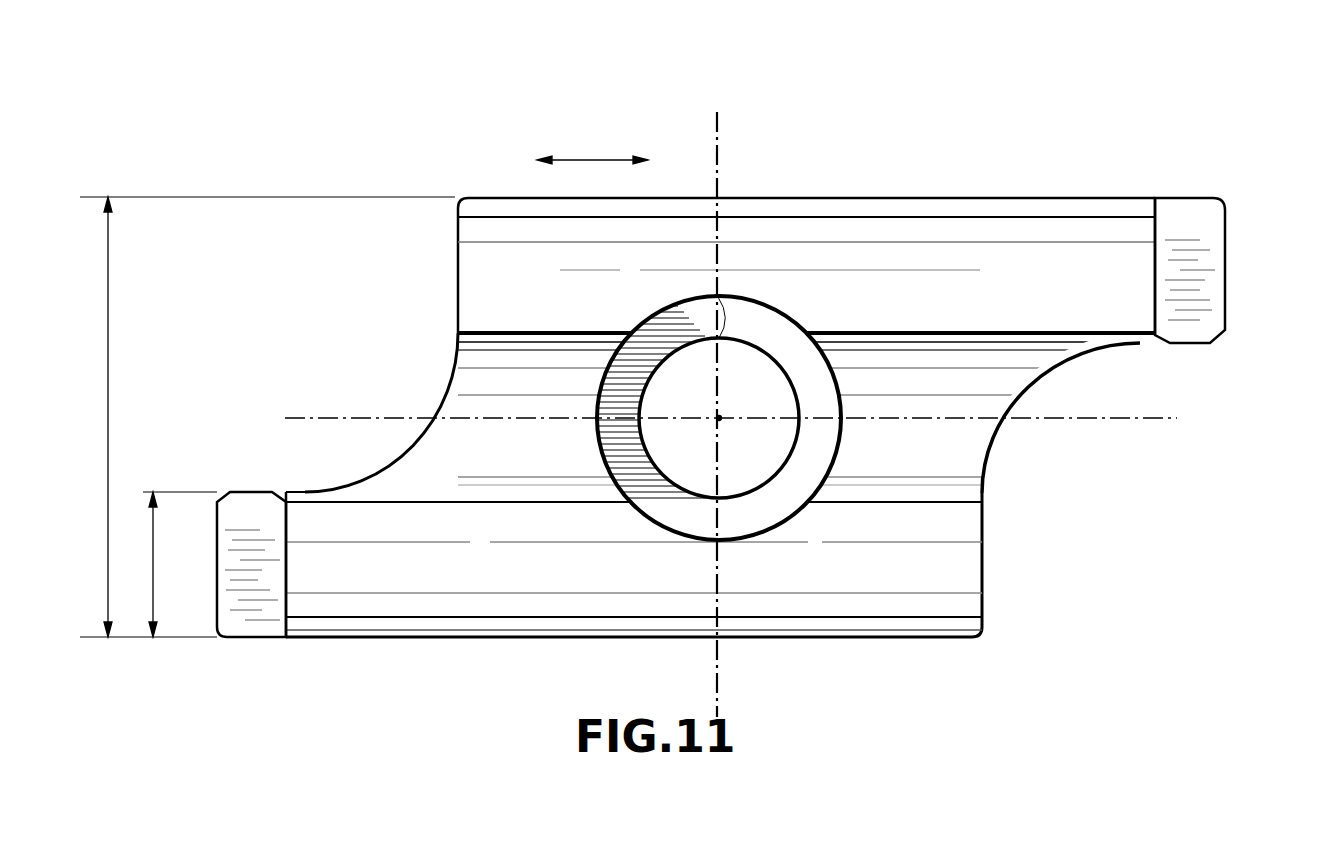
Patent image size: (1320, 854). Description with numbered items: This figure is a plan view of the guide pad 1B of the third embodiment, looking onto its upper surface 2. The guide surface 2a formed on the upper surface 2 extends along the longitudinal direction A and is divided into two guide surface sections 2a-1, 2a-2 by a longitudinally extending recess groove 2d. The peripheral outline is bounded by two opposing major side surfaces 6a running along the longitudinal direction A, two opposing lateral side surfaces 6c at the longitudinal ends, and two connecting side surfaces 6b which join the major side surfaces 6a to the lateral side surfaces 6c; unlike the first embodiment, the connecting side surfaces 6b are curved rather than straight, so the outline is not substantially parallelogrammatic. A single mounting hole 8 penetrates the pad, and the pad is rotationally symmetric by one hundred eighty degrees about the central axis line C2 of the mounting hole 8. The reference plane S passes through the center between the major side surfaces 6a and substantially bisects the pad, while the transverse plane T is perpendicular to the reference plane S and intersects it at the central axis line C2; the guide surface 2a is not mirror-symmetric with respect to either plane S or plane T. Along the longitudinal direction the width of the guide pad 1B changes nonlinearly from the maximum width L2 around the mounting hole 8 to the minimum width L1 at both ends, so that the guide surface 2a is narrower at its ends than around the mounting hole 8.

The guide pad 1B is at (1050, 122).
The upper surface 2 is at (846, 576).
The guide surface 2a is at (895, 232).
The guide surface section 2a-1 is at (780, 583).
The guide surface section 2a-2 is at (985, 231).
The recess groove 2d is at (473, 380).
The major side surface 6a is at (811, 198).
The connecting side surface 6b is at (418, 432).
The lateral side surface 6c is at (1226, 272).
The mounting hole 8 is at (631, 326).
The central axis line C2 is at (717, 419).
The transverse plane T is at (720, 147).
The reference plane S is at (1096, 418).
The longitudinal direction A is at (592, 150).
The minimum width L1 is at (170, 564).
The maximum width L2 is at (265, 417).